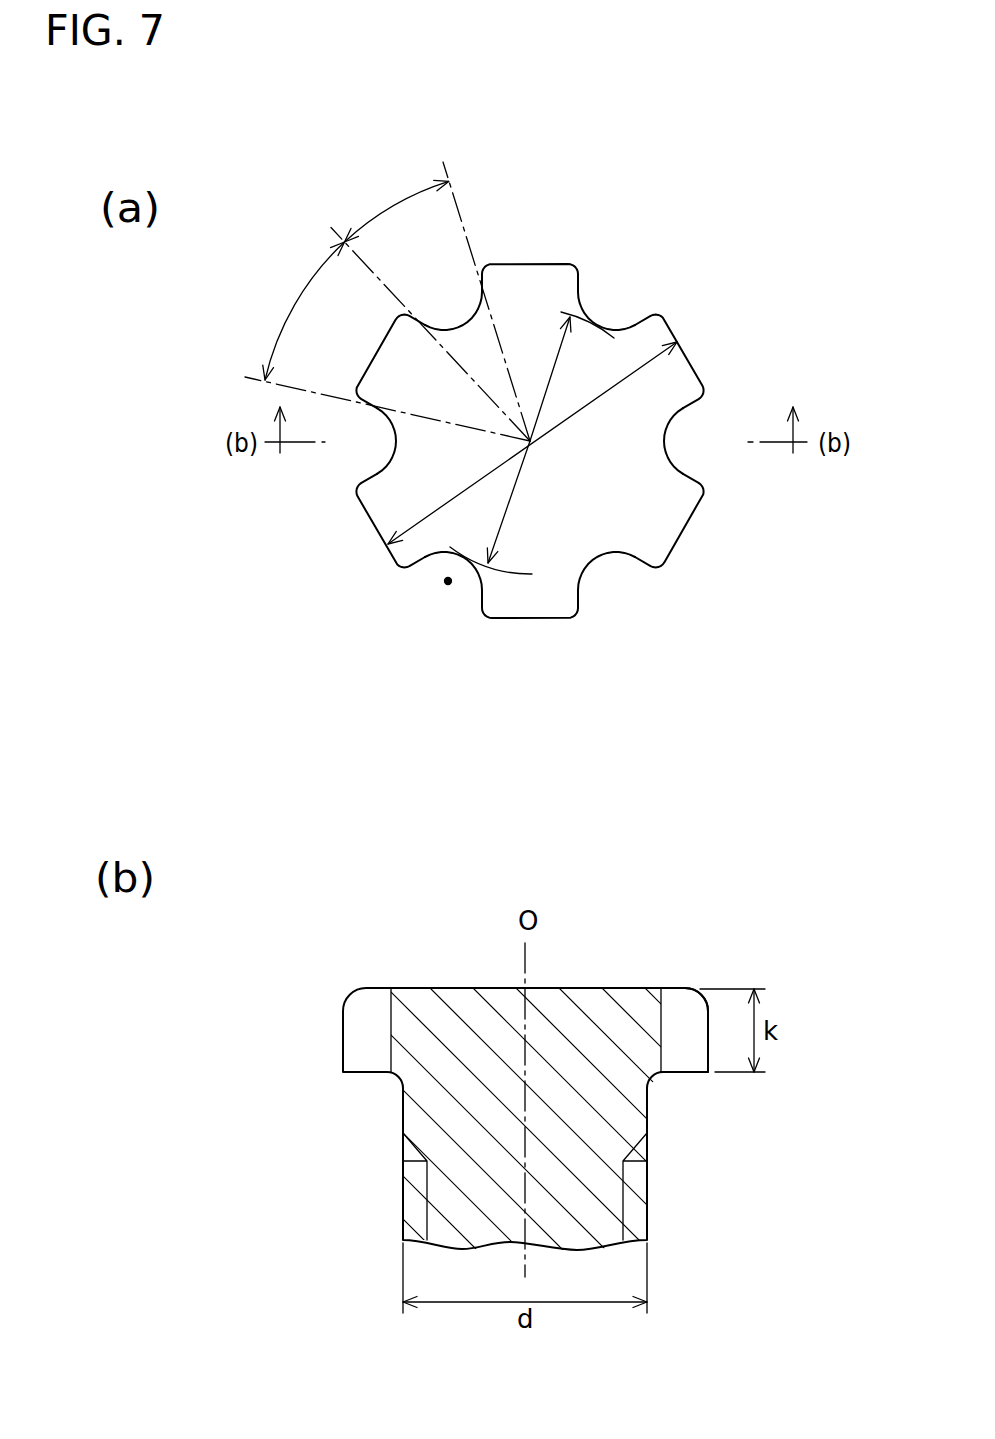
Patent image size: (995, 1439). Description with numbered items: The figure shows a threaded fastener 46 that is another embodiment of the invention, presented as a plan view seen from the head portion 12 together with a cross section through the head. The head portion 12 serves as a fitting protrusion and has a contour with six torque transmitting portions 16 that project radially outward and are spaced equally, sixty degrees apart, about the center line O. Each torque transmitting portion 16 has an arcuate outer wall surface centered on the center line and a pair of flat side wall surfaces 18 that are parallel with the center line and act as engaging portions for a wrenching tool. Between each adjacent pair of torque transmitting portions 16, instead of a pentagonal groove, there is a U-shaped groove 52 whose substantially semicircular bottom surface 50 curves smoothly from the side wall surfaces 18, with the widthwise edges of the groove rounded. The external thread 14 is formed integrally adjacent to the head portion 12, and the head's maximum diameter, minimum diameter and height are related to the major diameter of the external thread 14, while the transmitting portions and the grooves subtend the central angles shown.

The head portion 12 is at (519, 742).
The external thread 14 is at (412, 1203).
The torque transmitting portions 16 is at (372, 505).
The side wall surfaces 18 is at (585, 288).
The threaded fastener 46 is at (708, 348).
The bottom surface 50 is at (598, 323).
The U-shaped grooves 52 is at (446, 584).